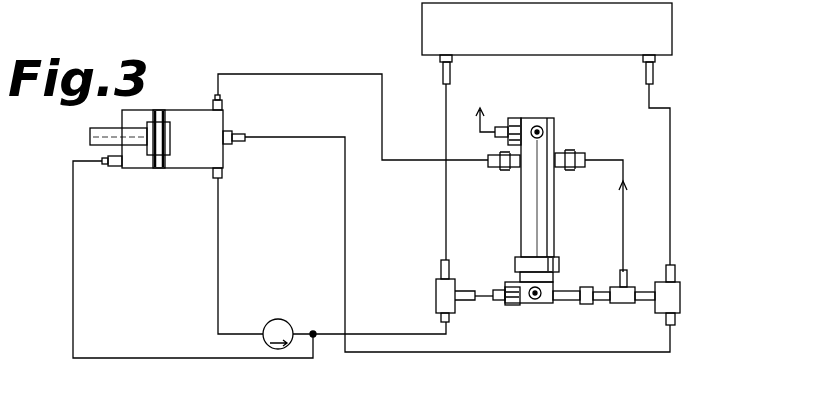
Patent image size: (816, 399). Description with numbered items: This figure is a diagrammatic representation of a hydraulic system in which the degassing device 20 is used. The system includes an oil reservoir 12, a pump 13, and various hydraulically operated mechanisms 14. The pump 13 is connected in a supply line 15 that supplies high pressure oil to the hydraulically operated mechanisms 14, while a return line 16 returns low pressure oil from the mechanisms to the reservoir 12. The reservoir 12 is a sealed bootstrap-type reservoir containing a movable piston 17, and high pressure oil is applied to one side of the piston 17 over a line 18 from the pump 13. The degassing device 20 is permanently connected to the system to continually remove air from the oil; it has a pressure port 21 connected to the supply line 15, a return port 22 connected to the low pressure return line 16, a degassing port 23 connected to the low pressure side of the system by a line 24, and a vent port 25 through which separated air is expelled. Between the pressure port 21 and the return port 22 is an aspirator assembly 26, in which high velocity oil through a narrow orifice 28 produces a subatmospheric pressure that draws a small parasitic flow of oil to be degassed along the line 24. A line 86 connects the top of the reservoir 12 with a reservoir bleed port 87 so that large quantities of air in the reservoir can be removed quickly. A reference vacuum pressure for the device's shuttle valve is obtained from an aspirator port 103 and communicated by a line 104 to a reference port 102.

The oil reservoir 12 is at (200, 110).
The pump 13 is at (279, 318).
The hydraulically operated mechanisms 14 is at (675, 22).
The supply line 15 is at (358, 334).
The return line 16 is at (672, 170).
The movable piston 17 is at (158, 130).
The line 18 is at (102, 357).
The degassing device 20 is at (563, 207).
The pressure port 21 is at (507, 288).
The return port 22 is at (553, 290).
The degassing port 23 is at (575, 160).
The line 24 is at (625, 206).
The vent port 25 is at (512, 118).
The aspirator assembly 26 is at (208, 21).
The orifice 28 is at (268, 9).
The line 86 is at (290, 73).
The reservoir bleed port 87 is at (493, 167).
The reference port 102 is at (545, 124).
The aspirator port 103 is at (535, 305).
The line 104 is at (520, 215).